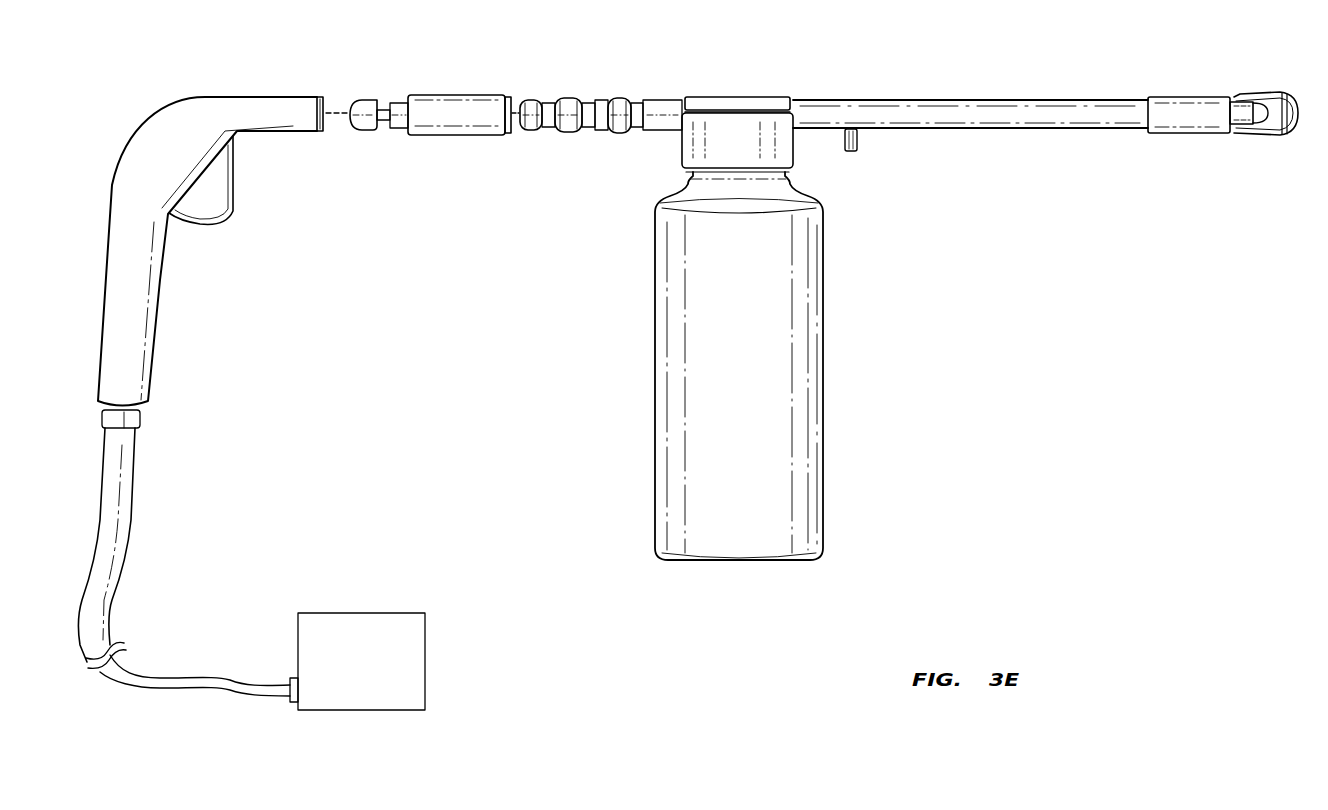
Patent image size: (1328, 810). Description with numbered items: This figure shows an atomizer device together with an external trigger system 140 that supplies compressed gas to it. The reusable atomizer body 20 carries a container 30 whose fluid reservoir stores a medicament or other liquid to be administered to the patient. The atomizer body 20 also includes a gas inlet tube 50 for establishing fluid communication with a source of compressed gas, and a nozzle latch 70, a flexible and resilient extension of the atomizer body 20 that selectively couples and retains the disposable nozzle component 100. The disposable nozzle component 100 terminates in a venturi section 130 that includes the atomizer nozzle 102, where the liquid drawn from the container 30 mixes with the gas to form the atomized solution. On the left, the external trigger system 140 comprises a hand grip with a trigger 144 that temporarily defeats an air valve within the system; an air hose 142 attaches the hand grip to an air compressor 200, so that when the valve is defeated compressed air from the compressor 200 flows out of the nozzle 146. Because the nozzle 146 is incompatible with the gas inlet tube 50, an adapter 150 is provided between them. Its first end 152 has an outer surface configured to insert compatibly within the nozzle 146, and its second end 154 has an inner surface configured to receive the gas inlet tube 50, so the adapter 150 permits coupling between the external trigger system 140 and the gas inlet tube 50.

The external trigger system 140 is at (124, 136).
The air hose 142 is at (132, 500).
The trigger 144 is at (228, 197).
The nozzle 146 is at (305, 105).
The adapter 150 is at (427, 106).
The first end 152 is at (365, 132).
The second end 154 is at (507, 135).
The gas inlet tube 50 is at (620, 106).
The atomizer body 20 is at (750, 96).
The container 30 is at (808, 292).
The nozzle latch 70 is at (858, 148).
The disposable nozzle component 100 is at (958, 90).
The atomizer nozzle 102 is at (1295, 96).
The venturi section 130 is at (1246, 136).
The air compressor 200 is at (357, 661).